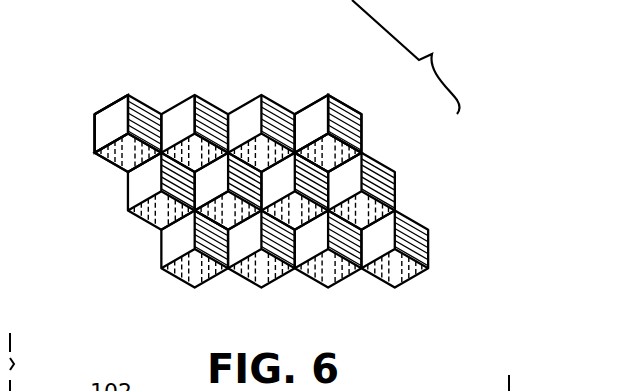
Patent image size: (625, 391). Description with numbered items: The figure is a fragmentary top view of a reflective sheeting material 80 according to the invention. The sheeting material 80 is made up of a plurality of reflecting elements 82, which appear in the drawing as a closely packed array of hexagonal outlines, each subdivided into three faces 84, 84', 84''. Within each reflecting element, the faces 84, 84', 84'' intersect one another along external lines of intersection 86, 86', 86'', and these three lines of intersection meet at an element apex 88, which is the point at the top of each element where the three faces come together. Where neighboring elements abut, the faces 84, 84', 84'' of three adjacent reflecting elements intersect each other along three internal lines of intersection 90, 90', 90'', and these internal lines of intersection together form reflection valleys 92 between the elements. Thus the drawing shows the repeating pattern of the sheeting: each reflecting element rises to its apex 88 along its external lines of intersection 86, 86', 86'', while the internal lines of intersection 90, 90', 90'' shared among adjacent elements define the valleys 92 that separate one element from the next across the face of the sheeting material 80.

The reflective sheeting material 80 is at (424, 228).
The reflecting elements 82 is at (414, 57).
The face 84 is at (367, 111).
The face 84' is at (369, 142).
The face 84'' is at (305, 97).
The external line of intersection 86 is at (112, 107).
The external line of intersection 86' is at (112, 179).
The external line of intersection 86'' is at (59, 151).
The element apex 88 is at (118, 138).
The internal line of intersection 90 is at (233, 130).
The internal line of intersection 90' is at (172, 210).
The internal line of intersection 90'' is at (222, 260).
The reflection valleys 92 is at (196, 137).